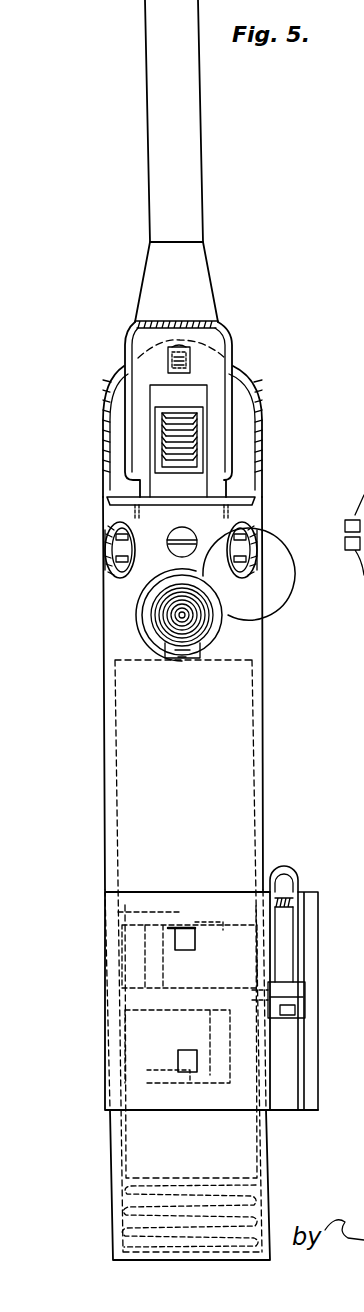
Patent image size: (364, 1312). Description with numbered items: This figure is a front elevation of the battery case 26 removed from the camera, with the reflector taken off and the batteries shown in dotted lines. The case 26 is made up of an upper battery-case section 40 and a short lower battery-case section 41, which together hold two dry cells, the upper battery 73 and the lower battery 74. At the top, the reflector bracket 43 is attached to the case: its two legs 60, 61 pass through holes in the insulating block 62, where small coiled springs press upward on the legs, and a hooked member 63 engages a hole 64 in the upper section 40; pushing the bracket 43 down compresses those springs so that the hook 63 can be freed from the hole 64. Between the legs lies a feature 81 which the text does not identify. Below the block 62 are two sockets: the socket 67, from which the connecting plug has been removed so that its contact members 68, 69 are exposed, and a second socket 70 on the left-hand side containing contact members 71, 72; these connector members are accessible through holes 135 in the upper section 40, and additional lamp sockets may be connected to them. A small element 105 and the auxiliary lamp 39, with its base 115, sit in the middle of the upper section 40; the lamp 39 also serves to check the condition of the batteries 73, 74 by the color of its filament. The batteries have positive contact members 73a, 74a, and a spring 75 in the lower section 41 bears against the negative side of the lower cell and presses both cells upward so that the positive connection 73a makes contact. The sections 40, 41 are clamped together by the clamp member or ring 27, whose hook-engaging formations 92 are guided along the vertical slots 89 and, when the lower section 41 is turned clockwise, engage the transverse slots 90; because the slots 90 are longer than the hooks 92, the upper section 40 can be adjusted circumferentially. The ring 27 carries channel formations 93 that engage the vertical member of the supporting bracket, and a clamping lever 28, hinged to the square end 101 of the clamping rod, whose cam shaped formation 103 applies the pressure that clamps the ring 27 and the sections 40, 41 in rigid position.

The reflector bracket 43 is at (192, 143).
The leg 60 is at (218, 397).
The leg 61 is at (140, 393).
The hooked member 63 is at (190, 362).
The hole 64 is at (168, 362).
The spring 81 is at (162, 440).
The insulating block 62 is at (187, 505).
The upper battery-case section 40 is at (263, 798).
The second socket 70 is at (122, 547).
The contact member 71 is at (122, 537).
The contact member 72 is at (125, 558).
The socket 67 is at (250, 547).
The contact member 68 is at (250, 535).
The contact member 69 is at (250, 558).
The holes 135 is at (113, 573).
The screw 105 is at (182, 550).
The auxiliary lamp 39 is at (233, 600).
The boss 115 is at (153, 637).
The positive contact member 73a is at (182, 650).
The battery 73 is at (240, 742).
The clamp member or ring 27 is at (132, 898).
The channel formations 93 is at (318, 917).
The clamping lever 28 is at (284, 880).
The square end 101 is at (305, 987).
The cam shaped formation 103 is at (300, 1000).
The positive contact member 74a is at (182, 910).
The vertical slots 89 is at (163, 972).
The hook-engaging formations 92 is at (195, 942).
The transverse slots 90 is at (220, 910).
The battery case 26 is at (90, 895).
The battery 74 is at (250, 1143).
The spring 75 is at (238, 1198).
The lower battery-case section 41 is at (270, 1202).